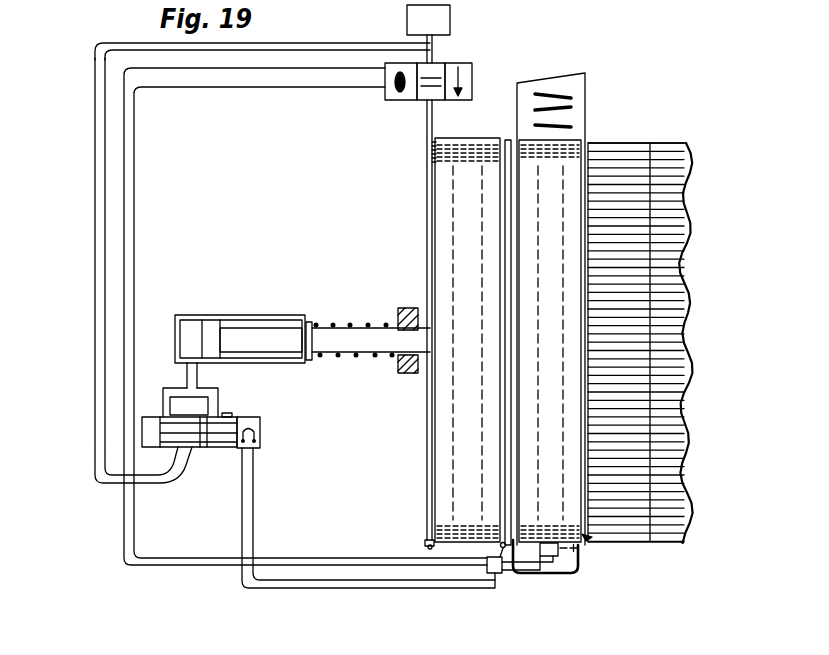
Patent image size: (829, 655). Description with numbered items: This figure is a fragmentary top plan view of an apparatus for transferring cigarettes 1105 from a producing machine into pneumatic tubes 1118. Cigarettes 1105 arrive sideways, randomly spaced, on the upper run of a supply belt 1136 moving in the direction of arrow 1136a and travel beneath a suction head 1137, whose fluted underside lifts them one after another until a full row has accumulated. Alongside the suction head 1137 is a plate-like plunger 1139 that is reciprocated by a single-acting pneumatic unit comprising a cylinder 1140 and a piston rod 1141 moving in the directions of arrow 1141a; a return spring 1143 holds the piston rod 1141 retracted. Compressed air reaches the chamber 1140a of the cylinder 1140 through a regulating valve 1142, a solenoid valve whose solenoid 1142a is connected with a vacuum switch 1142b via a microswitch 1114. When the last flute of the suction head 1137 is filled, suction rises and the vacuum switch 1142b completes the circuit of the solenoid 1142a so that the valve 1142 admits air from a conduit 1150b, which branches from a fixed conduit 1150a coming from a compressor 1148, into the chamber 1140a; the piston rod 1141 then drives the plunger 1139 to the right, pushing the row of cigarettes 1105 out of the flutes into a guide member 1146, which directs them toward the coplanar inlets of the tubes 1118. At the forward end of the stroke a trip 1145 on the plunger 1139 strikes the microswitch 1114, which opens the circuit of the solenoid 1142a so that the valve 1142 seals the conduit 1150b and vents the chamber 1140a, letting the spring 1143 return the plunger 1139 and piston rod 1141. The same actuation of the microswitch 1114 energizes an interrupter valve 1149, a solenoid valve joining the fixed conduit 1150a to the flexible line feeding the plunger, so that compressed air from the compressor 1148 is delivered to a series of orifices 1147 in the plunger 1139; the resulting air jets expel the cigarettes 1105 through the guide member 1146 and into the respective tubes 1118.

The cigarettes 1105 is at (573, 127).
The microswitch 1114 is at (500, 574).
The pneumatic tubes 1118 is at (700, 226).
The supply belt 1136 is at (568, 78).
The arrow 1136a is at (550, 66).
The suction head 1137 is at (584, 536).
The plunger 1139 is at (506, 140).
The cylinder 1140 is at (244, 320).
The chamber 1140a is at (190, 326).
The piston rod 1141 is at (388, 350).
The arrow 1141a is at (383, 304).
The regulating valve 1142 is at (194, 462).
The solenoid 1142a is at (261, 430).
The vacuum switch 1142b is at (560, 566).
The return spring 1143 is at (332, 358).
The trip 1145 is at (428, 548).
The guide member 1146 is at (648, 142).
The orifices 1147 is at (427, 182).
The compressor 1148 is at (450, 17).
The interrupter valve 1149 is at (456, 63).
The fixed conduit 1150a is at (428, 62).
The conduit 1150b is at (115, 270).